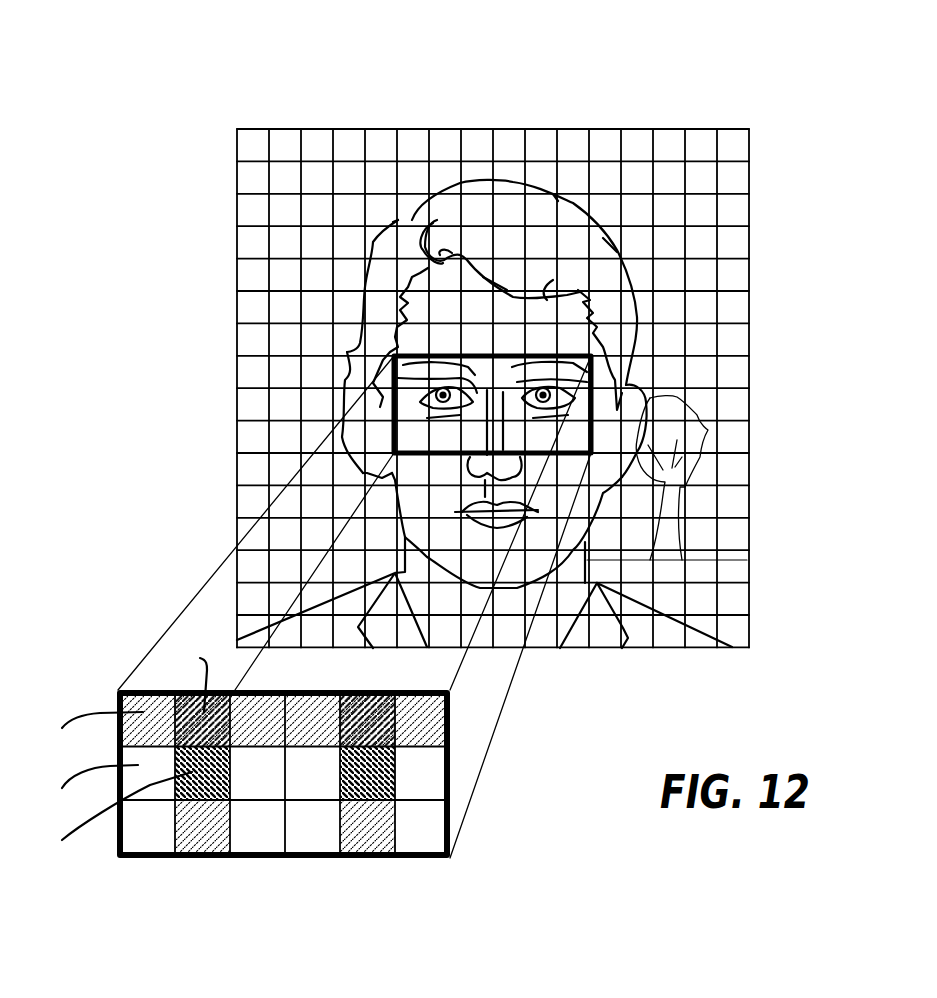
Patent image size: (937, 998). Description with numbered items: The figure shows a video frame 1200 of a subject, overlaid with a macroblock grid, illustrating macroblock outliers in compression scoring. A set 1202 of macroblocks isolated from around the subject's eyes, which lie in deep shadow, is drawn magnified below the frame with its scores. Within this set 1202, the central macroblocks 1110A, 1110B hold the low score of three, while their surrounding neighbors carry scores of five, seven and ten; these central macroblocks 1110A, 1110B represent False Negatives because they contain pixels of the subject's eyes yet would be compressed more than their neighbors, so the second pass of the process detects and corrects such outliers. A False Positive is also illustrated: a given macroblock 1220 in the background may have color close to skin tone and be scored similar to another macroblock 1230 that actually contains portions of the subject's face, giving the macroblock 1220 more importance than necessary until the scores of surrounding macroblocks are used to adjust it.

The video frame 1200 is at (250, 82).
The set of macroblocks 1202 is at (134, 658).
The given macroblock 1220 is at (702, 437).
The another macroblock 1230 is at (647, 412).
The first feature pixel 1110A is at (230, 770).
The second feature pixel 1110B is at (340, 770).